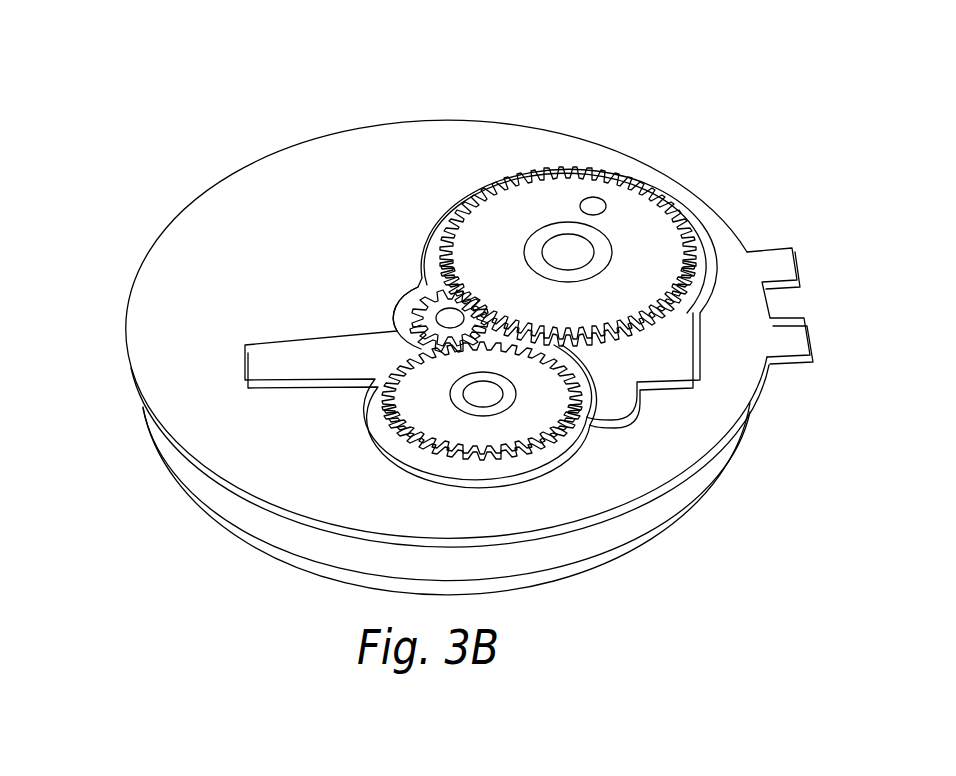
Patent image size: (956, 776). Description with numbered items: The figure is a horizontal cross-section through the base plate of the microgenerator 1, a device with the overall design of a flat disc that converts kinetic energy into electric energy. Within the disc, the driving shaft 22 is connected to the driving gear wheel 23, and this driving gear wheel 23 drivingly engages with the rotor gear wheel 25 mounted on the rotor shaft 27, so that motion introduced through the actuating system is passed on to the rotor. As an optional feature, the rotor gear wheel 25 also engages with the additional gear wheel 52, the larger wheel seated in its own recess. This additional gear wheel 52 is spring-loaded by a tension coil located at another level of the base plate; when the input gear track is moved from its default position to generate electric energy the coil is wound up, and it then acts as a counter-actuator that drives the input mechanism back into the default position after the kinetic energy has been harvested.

The microgenerator 1 is at (195, 110).
The additional gear wheel 52 is at (642, 212).
The rotor shaft 27 is at (450, 318).
The rotor gear wheel 25 is at (395, 301).
The driving shaft 22 is at (483, 393).
The driving gear wheel 23 is at (497, 430).